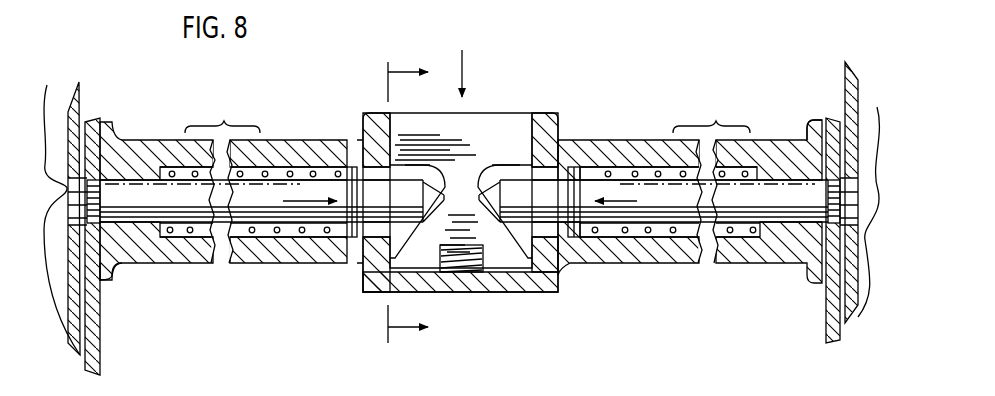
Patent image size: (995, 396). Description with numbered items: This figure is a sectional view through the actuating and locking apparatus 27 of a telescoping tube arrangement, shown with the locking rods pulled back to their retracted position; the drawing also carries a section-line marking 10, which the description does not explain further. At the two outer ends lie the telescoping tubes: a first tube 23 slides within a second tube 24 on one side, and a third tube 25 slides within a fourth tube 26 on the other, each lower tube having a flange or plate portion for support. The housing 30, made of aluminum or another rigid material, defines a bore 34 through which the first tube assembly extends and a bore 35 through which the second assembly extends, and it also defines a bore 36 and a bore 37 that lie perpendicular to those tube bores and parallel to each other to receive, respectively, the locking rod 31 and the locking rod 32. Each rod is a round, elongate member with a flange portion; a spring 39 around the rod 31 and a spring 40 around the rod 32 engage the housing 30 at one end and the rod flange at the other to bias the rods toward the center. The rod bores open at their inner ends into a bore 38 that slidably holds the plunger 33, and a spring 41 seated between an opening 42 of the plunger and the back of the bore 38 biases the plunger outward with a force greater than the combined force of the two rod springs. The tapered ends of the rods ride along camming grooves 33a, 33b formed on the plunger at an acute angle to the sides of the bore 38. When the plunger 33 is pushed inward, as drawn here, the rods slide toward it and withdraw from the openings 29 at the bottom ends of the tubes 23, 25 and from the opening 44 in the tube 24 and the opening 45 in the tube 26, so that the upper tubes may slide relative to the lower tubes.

The section line 10- 10 is at (389, 205).
The first tube 23 is at (80, 113).
The second tube 24 is at (100, 328).
The third tube 25 is at (845, 108).
The fourth tube 26 is at (825, 323).
The actuating and locking apparatus 27 is at (593, 148).
The openings 29 is at (463, 208).
The housing 30 is at (277, 142).
The locking rod 31 is at (130, 188).
The locking rod 32 is at (773, 217).
The plunger 33 is at (487, 122).
The camming groove 33a is at (400, 258).
The camming groove 33b is at (520, 242).
The bore 34 is at (88, 112).
The bore 35 is at (817, 142).
The bore 36 is at (302, 172).
The bore 37 is at (625, 175).
The bore 38 is at (516, 128).
The spring 39 is at (297, 232).
The spring 40 is at (637, 235).
The spring 41 is at (457, 272).
The opening 42 is at (525, 293).
The opening 44 is at (123, 263).
The opening 45 is at (837, 237).